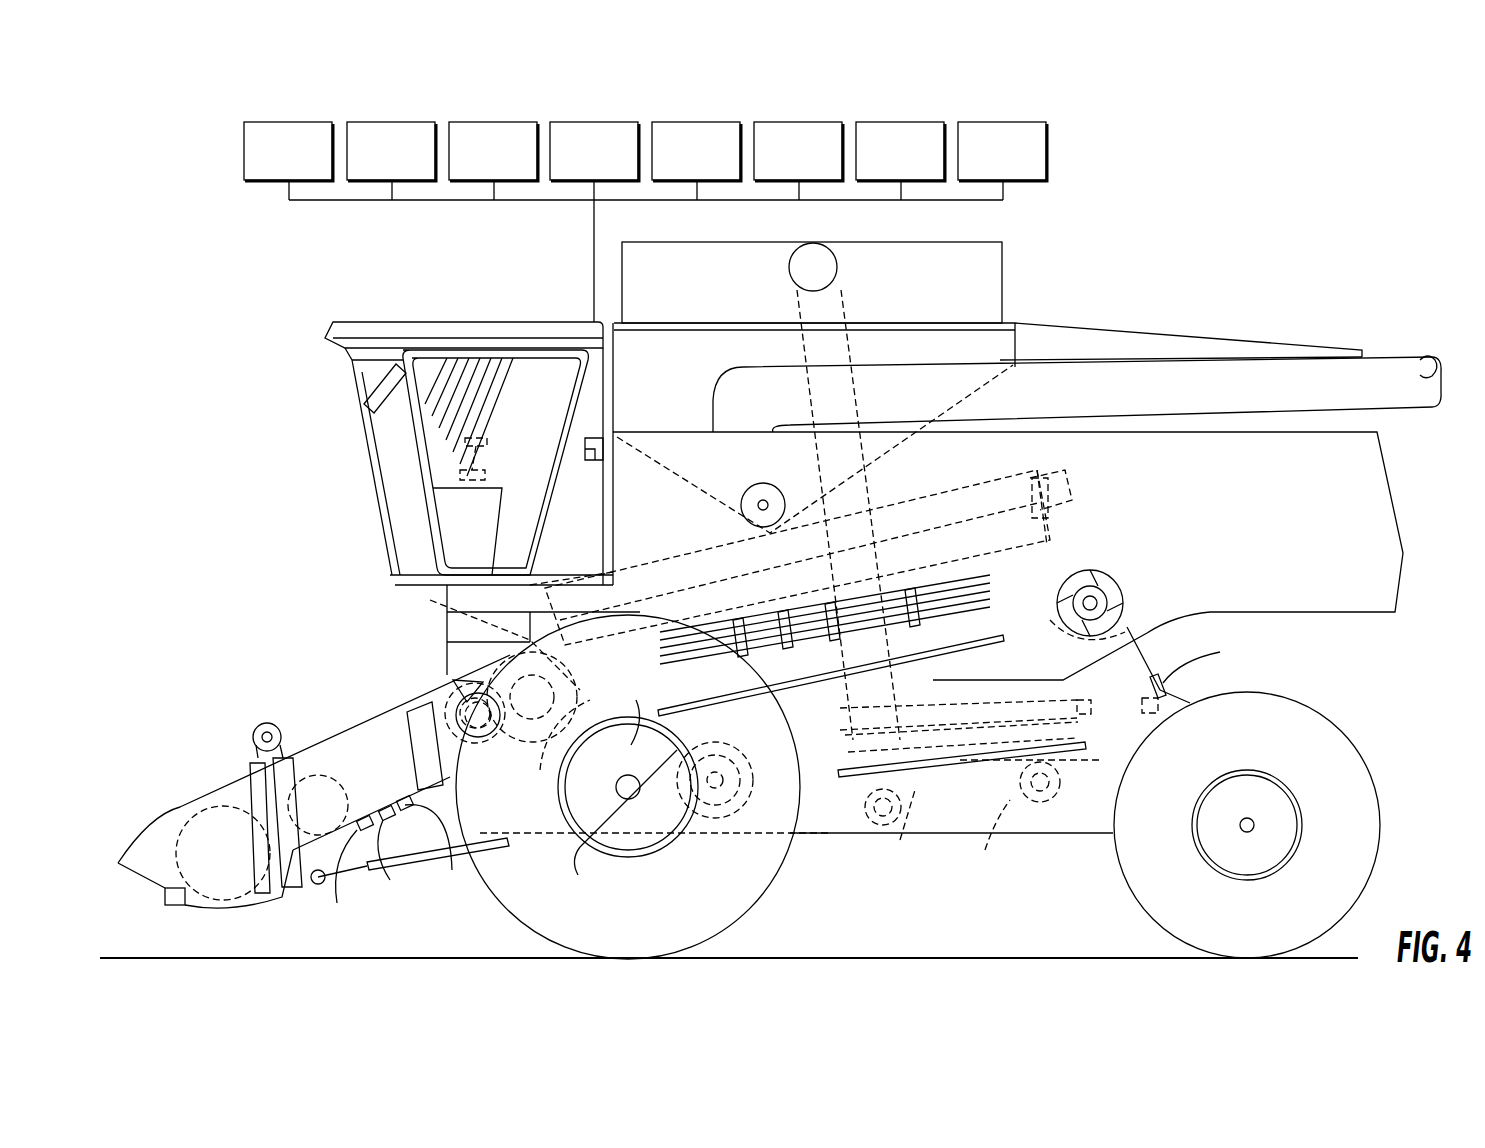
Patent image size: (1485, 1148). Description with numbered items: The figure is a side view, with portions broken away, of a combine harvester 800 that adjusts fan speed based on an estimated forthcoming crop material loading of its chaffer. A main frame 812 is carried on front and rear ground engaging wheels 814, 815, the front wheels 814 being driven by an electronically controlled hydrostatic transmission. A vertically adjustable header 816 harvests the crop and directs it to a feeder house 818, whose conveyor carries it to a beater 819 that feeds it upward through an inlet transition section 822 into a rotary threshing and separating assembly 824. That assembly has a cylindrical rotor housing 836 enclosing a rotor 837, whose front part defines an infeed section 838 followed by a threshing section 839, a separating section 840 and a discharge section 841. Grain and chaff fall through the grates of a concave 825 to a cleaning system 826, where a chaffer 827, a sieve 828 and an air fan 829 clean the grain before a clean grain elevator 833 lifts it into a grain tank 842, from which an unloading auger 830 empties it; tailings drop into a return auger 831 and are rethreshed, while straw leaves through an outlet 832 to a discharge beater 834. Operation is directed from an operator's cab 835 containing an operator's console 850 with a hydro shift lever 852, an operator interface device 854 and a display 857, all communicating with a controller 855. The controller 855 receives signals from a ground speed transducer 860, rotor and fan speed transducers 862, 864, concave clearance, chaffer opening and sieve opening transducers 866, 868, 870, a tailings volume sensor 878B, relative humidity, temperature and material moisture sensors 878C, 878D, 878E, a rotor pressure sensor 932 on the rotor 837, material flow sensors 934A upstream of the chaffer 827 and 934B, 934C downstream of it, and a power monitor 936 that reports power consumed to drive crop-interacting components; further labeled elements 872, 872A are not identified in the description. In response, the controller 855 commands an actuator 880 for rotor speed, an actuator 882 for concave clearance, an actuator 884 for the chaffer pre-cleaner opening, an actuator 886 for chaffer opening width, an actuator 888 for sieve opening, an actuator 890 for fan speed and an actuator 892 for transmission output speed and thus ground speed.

The combine harvester 800 is at (252, 72).
The actuator 880 is at (290, 122).
The actuator 882 is at (393, 122).
The actuator 884 is at (494, 122).
The actuator 886 is at (595, 122).
The actuator 888 is at (696, 122).
The actuator 890 is at (797, 122).
The actuator 892 is at (899, 122).
The power monitor 936 is at (1001, 122).
The main frame 812 is at (1392, 506).
The front ground engaging wheels 814 is at (460, 700).
The rear ground engaging wheels 815 is at (1378, 815).
The header 816 is at (180, 784).
The feeder house 818 is at (373, 733).
The beater 819 is at (503, 662).
The inlet transition section 822 is at (430, 600).
The rotary threshing and separating assembly 824 is at (707, 572).
The concave 825 is at (780, 830).
The cleaning system 826 is at (983, 712).
The chaffer 827 is at (1083, 705).
The sieve 828 is at (1068, 752).
The air fan 829 is at (700, 840).
The unloading auger 830 is at (1366, 396).
The return elevator or auger 831 is at (1040, 803).
The outlet 832 is at (1065, 536).
The clean grain elevator 833 is at (860, 412).
The discharge beater 834 is at (1118, 582).
The operator's cab 835 is at (467, 322).
The rotor housing 836 is at (990, 482).
The rotor 837 is at (1008, 492).
The infeed section 838 is at (572, 572).
The threshing section 839 is at (725, 542).
The separating section 840 is at (900, 506).
The discharge section 841 is at (1040, 466).
The grain tank 842 is at (1015, 347).
The operator's console 850 is at (507, 448).
The hydro shift lever 852 is at (450, 465).
The operator interface device 854 is at (468, 482).
The controller 855 is at (602, 437).
The display 857 is at (377, 393).
The ground speed transducer 860 is at (628, 787).
The rotor speed transducer 862 is at (680, 600).
The fan speed transducer 864 is at (705, 815).
The concave clearance transducer 866 is at (577, 743).
The chaffer opening transducer 868 is at (1130, 660).
The sieve opening transducer 870 is at (1085, 728).
The sensor 872 is at (868, 838).
The sensor 872A is at (1015, 665).
The tailings volume sensor 878B is at (986, 841).
The relative humidity sensor 878C is at (342, 878).
The temperature sensor 878D is at (395, 864).
The material moisture sensor 878E is at (410, 858).
The rotor pressure sensor 932 is at (637, 735).
The material flow sensor 934A is at (580, 868).
The material flow sensor 934B is at (1216, 660).
The material flow sensor 934C is at (920, 835).